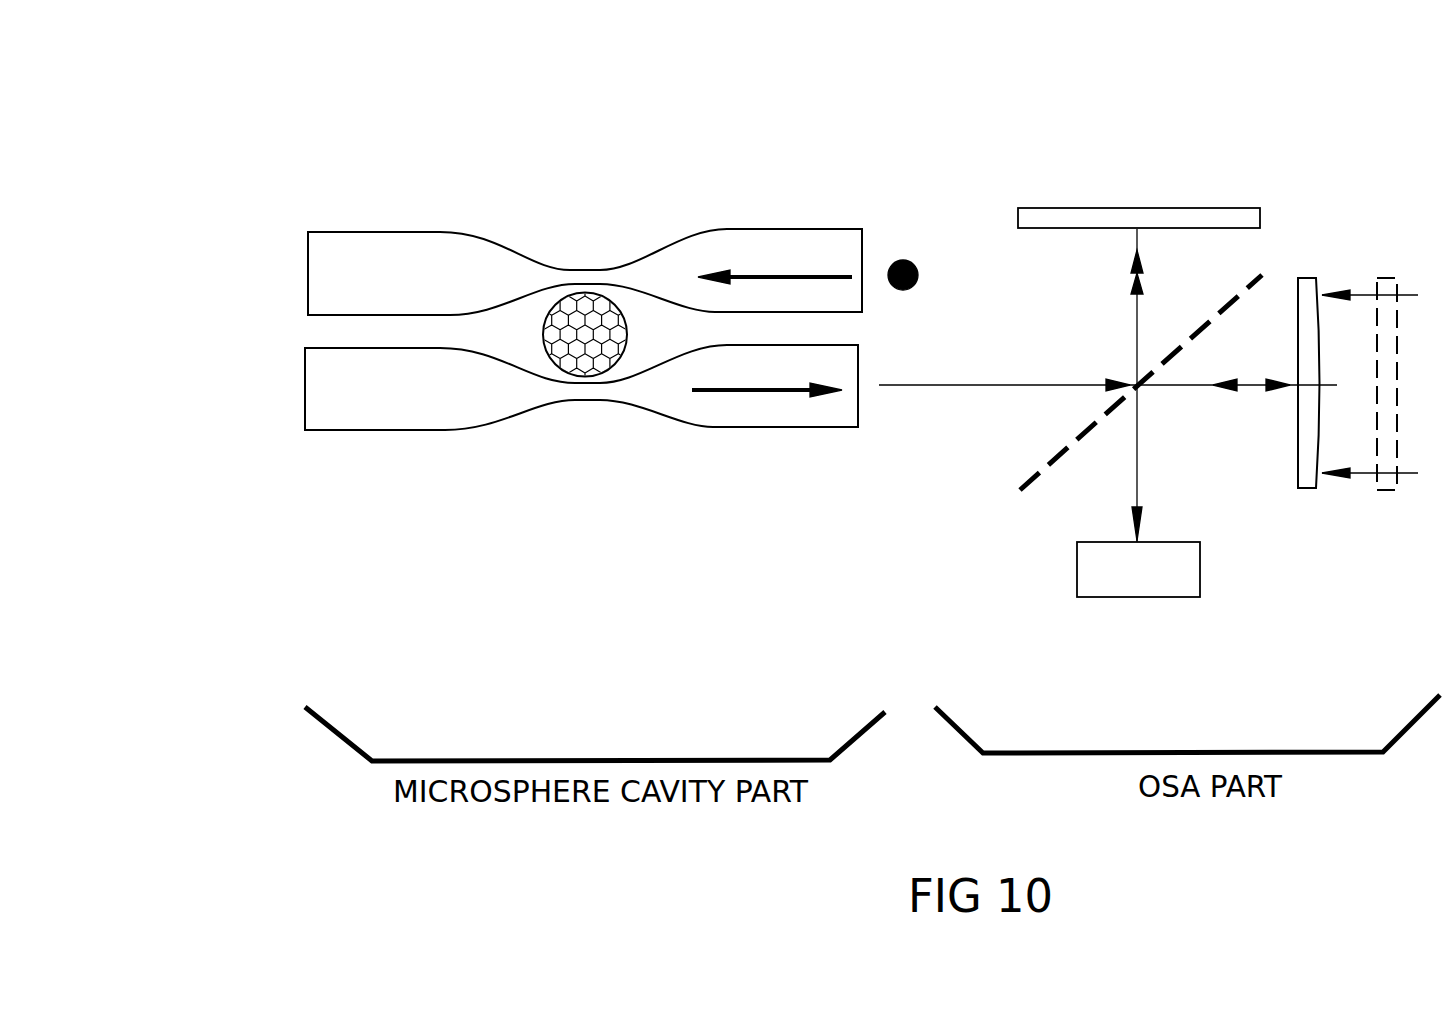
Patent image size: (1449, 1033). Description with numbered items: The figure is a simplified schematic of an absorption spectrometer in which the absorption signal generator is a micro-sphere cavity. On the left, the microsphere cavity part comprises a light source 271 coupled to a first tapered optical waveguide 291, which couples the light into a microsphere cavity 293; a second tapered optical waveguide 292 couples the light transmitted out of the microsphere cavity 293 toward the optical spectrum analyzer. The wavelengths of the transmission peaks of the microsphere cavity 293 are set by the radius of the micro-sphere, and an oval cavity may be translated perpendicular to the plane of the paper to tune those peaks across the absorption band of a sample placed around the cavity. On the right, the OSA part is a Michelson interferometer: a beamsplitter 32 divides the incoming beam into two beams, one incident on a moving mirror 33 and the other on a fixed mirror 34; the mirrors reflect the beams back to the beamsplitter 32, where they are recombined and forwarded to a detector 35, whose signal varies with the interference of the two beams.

The first tapered optical waveguide 291 is at (445, 230).
The second tapered optical waveguide 292 is at (447, 430).
The microsphere cavity 293 is at (583, 283).
The light source 271 is at (1182, 139).
The beamsplitter 32 is at (1010, 478).
The moving mirror 33 is at (1325, 268).
The fixed mirror 34 is at (1262, 212).
The detector 35 is at (1203, 573).